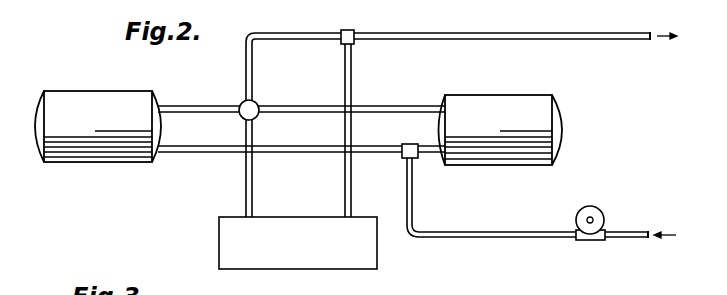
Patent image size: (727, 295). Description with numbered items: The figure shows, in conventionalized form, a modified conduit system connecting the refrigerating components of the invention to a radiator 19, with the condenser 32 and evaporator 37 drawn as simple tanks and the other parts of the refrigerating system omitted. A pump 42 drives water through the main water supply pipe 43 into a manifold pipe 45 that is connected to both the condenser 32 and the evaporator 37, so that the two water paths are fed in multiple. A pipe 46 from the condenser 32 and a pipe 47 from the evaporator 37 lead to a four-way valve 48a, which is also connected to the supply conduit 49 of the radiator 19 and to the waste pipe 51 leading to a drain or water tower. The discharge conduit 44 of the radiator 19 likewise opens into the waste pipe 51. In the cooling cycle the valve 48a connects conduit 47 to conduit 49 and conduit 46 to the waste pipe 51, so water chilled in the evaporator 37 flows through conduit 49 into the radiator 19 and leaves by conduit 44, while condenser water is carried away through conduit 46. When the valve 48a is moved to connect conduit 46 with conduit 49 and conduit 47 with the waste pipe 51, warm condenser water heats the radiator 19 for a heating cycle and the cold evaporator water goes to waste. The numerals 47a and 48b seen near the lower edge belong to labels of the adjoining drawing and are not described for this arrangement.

The radiator 19 is at (219, 236).
The condenser 32 is at (497, 89).
The evaporator 37 is at (103, 99).
The pump 42 is at (596, 208).
The main water supply pipe 43 is at (488, 231).
The discharge conduit 44 is at (349, 193).
The manifold pipe 45 is at (304, 152).
The pipe from the condenser 46 is at (385, 106).
The pipe from the evaporator 47 is at (191, 106).
The pipe 47a is at (218, 286).
The four-way valve 48a is at (257, 102).
The valve 48b is at (300, 294).
The supply conduit 49 is at (245, 182).
The waste pipe 51 is at (319, 29).